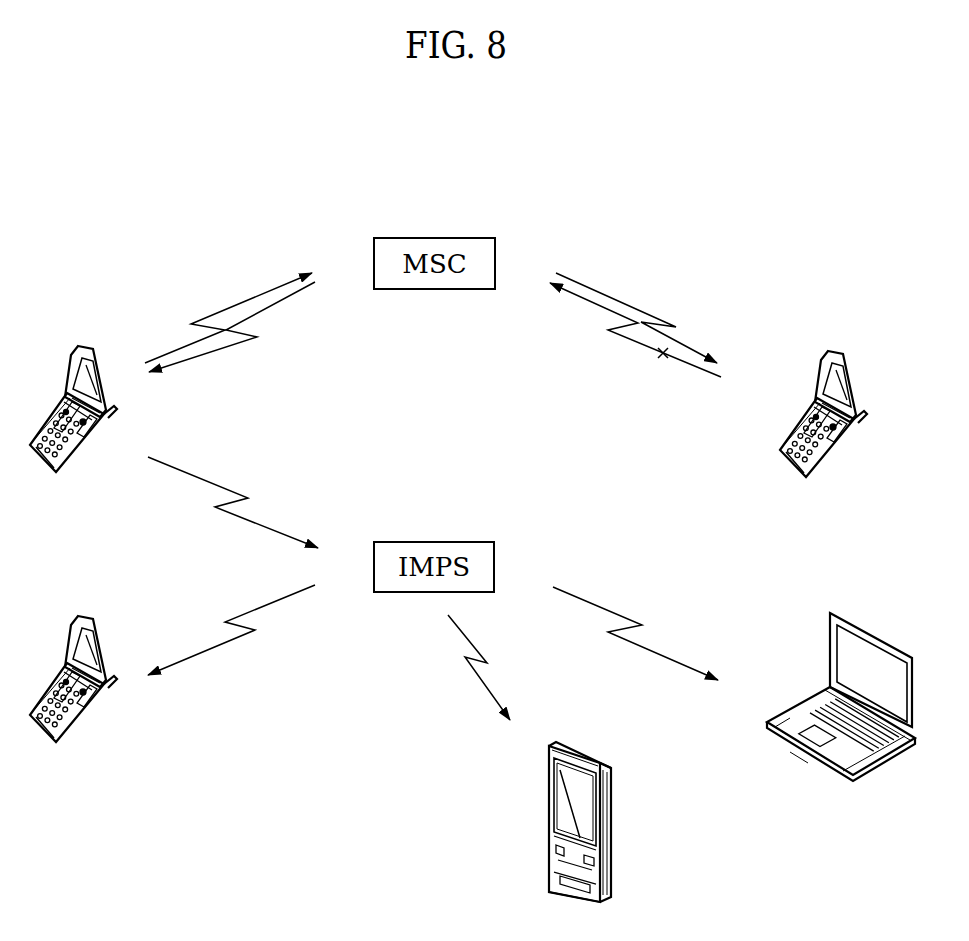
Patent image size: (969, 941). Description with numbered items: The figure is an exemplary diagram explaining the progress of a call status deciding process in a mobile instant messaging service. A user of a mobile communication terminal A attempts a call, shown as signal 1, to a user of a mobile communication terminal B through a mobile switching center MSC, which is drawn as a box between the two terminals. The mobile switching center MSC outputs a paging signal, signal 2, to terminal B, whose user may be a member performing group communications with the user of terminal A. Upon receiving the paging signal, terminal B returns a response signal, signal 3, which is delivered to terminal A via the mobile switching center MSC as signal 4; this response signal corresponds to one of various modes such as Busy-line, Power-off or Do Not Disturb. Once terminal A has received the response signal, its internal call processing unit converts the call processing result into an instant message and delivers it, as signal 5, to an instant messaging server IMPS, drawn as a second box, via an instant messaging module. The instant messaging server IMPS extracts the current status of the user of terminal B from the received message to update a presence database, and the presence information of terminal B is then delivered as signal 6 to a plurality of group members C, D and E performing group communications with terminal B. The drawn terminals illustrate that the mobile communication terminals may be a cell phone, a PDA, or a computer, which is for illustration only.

The call attempt signal 1 is at (228, 318).
The paging signal 2 is at (635, 330).
The response signal 3 is at (636, 319).
The relayed response signal 4 is at (232, 327).
The instant message signal 5 is at (233, 502).
The presence information delivery signal 6 is at (433, 650).
The mobile communication terminal A is at (73, 433).
The mobile communication terminal B is at (823, 437).
The group member terminal C is at (73, 701).
The group member terminal D is at (580, 841).
The group member terminal E is at (841, 717).